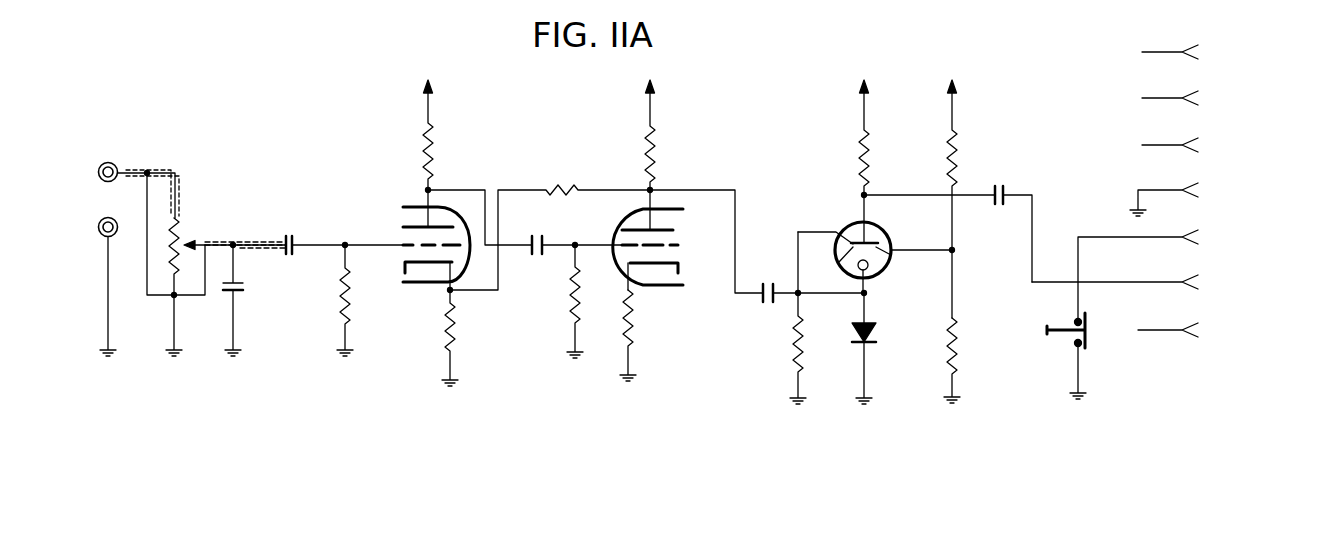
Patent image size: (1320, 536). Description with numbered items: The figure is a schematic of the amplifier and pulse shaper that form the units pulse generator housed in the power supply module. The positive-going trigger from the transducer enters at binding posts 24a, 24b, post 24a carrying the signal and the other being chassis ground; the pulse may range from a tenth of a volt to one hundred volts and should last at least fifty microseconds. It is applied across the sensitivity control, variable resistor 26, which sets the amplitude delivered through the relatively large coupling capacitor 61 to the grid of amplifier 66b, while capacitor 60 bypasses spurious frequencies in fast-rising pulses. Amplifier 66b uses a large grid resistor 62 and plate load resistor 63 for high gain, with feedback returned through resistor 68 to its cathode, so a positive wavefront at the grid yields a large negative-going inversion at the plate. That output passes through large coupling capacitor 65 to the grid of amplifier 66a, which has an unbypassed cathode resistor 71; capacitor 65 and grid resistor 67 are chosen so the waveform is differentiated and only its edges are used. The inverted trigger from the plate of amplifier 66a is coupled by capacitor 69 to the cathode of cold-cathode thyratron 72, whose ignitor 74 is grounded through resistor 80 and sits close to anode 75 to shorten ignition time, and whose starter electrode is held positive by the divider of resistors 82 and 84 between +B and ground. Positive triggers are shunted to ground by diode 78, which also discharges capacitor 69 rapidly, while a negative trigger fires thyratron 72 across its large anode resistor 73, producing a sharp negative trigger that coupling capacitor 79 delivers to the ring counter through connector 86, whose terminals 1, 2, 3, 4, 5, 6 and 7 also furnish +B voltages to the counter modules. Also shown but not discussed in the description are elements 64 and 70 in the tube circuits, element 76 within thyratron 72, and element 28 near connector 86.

The terminal 1 is at (1176, 52).
The terminal 2 is at (1176, 98).
The terminal 3 is at (1176, 145).
The ground terminal 4 is at (1170, 199).
The terminal 5 is at (1144, 274).
The output terminal 6 is at (1121, 282).
The terminal 7 is at (1174, 330).
The binding post 24a is at (118, 213).
The binding post 24b is at (120, 157).
The variable resistor 26 is at (181, 215).
The switch 28 is at (1056, 337).
The capacitor 60 is at (235, 291).
The coupling capacitor 61 is at (292, 250).
The grid resistor 62 is at (340, 290).
The plate load resistor 63 is at (423, 145).
The cathode resistor 64 is at (445, 317).
The coupling capacitor 65 is at (538, 255).
The amplifier 66a is at (609, 238).
The amplifier 66b is at (414, 205).
The grid resistor 67 is at (570, 305).
The resistor 68 is at (547, 188).
The coupling capacitor 69 is at (763, 304).
The plate resistor 70 is at (652, 158).
The cathode resistor 71 is at (636, 317).
The thyratron 72 is at (875, 244).
The anode resistor 73 is at (868, 160).
The ignitor 74 is at (838, 235).
The anode 75 is at (840, 262).
The collector electrode 76 is at (890, 247).
The diode 78 is at (873, 325).
The coupling capacitor 79 is at (1005, 192).
The resistor 80 is at (793, 353).
The resistor 82 is at (955, 160).
The resistor 84 is at (954, 347).
The connector 86 is at (1156, 191).